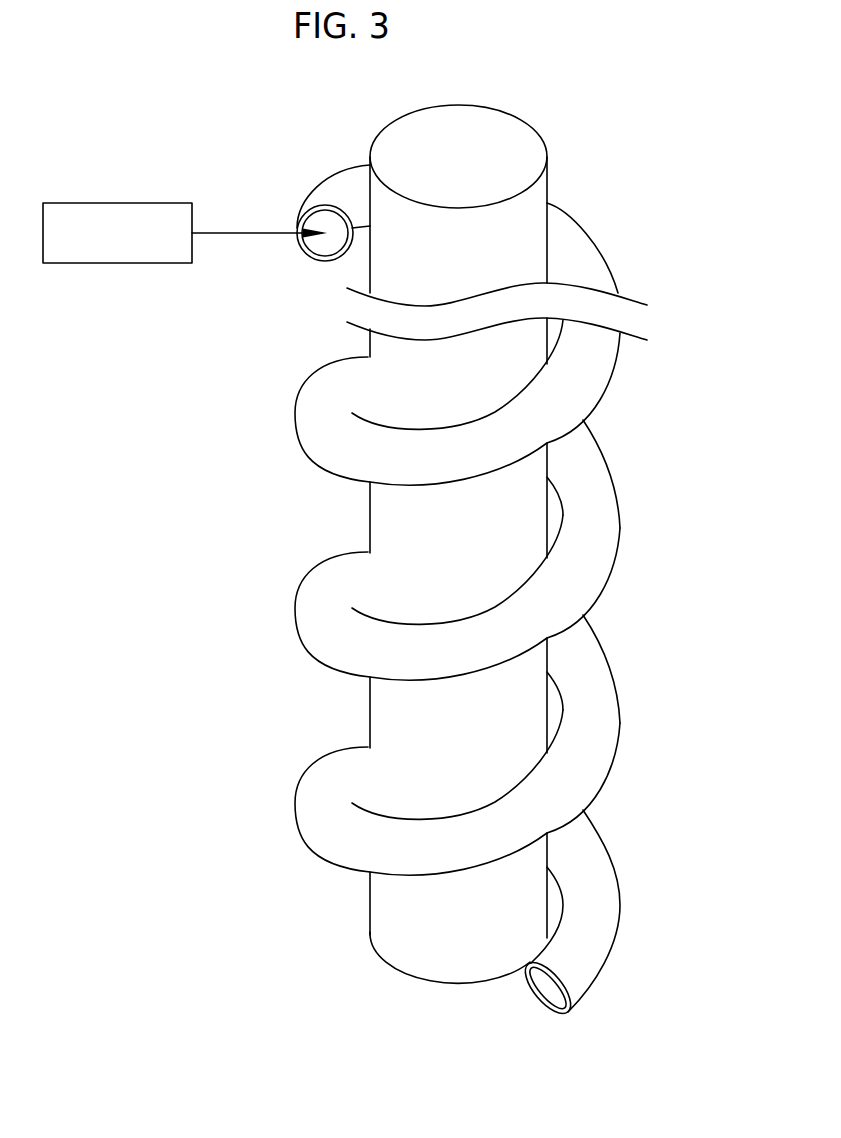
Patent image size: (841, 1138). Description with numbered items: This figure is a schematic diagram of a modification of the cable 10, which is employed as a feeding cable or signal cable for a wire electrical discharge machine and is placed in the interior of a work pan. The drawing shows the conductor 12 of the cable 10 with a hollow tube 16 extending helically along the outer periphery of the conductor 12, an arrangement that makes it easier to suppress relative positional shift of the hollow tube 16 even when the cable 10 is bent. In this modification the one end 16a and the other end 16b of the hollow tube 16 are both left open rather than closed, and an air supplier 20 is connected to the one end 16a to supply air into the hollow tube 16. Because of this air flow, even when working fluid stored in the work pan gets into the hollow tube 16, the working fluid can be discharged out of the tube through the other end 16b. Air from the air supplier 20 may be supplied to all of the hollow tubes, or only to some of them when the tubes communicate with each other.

The cable 10 is at (662, 108).
The conductor 12 is at (480, 122).
The hollow tube 16 is at (612, 514).
The one end 16a is at (309, 281).
The other end 16b is at (526, 1010).
The air supplier 20 is at (90, 203).